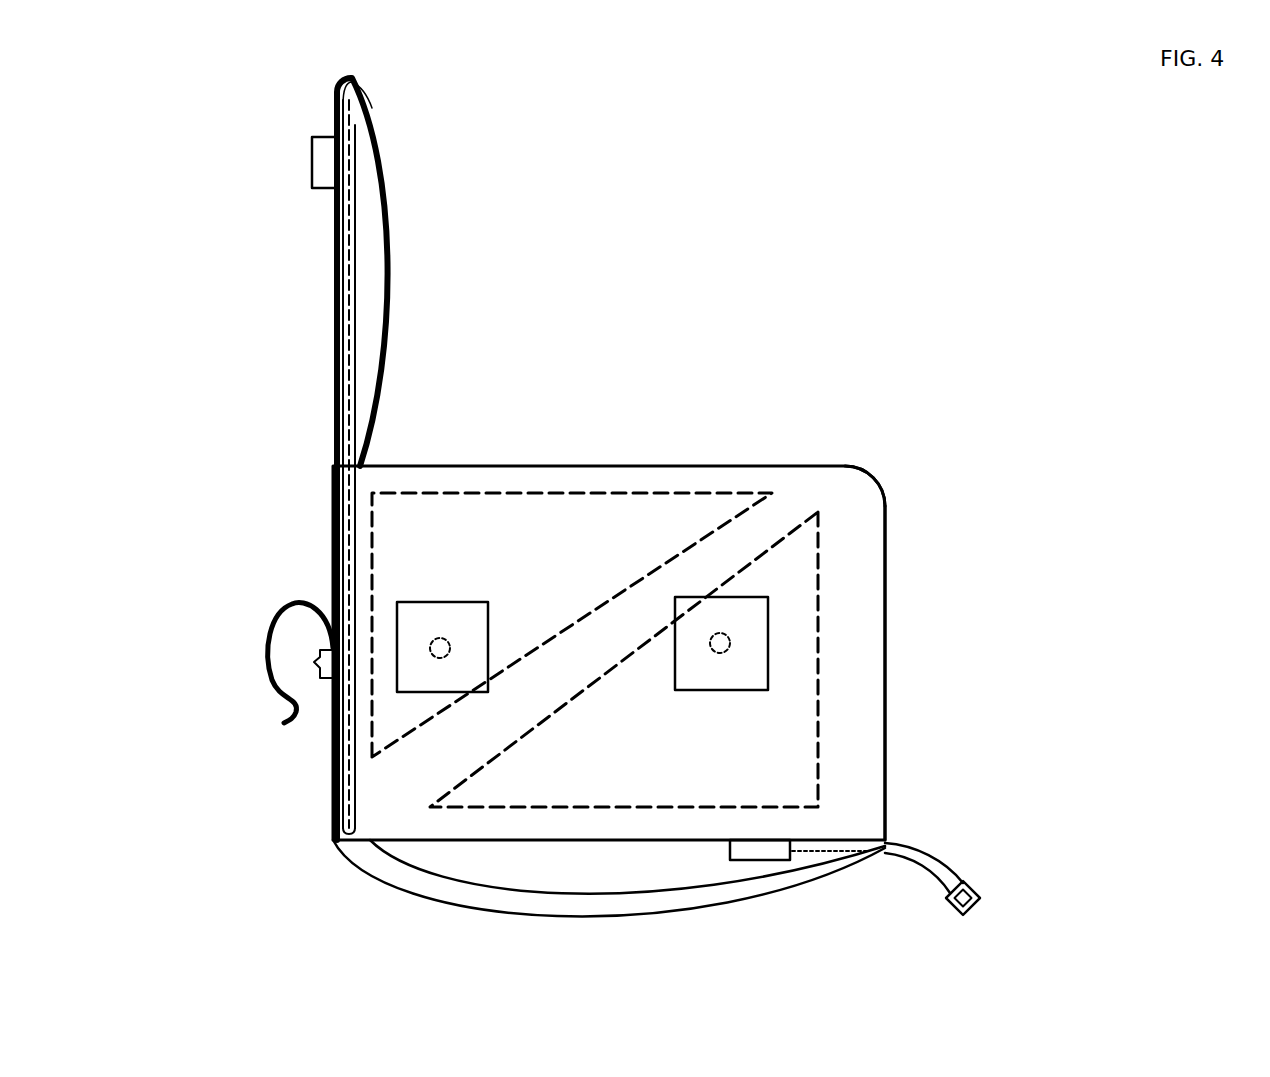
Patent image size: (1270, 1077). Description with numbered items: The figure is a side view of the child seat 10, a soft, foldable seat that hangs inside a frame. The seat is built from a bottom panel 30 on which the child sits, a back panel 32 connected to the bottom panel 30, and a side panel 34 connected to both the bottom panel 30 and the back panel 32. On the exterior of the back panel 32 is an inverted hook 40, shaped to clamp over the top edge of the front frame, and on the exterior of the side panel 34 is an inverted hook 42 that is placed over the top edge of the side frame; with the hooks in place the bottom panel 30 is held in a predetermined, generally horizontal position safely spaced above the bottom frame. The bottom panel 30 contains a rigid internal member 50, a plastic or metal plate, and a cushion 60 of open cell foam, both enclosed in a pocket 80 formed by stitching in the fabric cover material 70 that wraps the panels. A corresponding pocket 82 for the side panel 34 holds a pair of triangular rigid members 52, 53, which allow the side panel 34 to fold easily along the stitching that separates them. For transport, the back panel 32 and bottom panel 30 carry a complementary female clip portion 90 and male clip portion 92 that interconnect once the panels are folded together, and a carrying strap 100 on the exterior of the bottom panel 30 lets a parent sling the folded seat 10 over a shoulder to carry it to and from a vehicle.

The child seat 10 is at (898, 318).
The bottom panel 30 is at (465, 840).
The back panel 32 is at (333, 373).
The side panel 34 is at (885, 500).
The inverted hook 40 is at (268, 632).
The inverted hook 42 is at (455, 602).
The rigid internal member 50 is at (343, 803).
The rigid member 52 is at (470, 492).
The rigid member 53 is at (820, 765).
The cushion 60 is at (360, 273).
The fabric cover material 70 is at (383, 350).
The pocket 80 is at (370, 108).
The pocket 82 is at (830, 478).
The female clip portion 90 is at (313, 178).
The male clip portion 92 is at (918, 853).
The carrying strap 100 is at (530, 918).